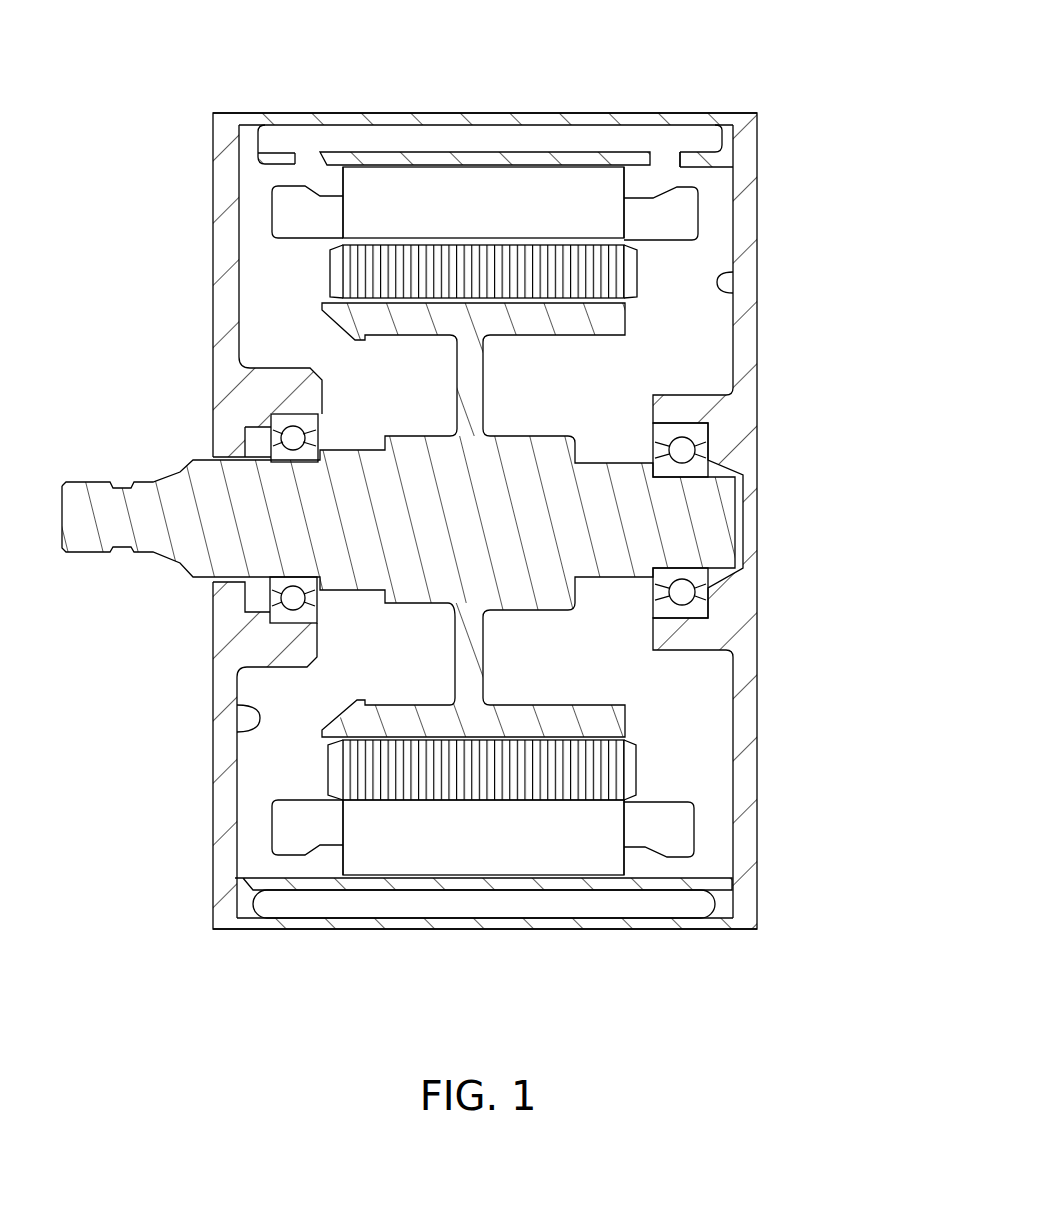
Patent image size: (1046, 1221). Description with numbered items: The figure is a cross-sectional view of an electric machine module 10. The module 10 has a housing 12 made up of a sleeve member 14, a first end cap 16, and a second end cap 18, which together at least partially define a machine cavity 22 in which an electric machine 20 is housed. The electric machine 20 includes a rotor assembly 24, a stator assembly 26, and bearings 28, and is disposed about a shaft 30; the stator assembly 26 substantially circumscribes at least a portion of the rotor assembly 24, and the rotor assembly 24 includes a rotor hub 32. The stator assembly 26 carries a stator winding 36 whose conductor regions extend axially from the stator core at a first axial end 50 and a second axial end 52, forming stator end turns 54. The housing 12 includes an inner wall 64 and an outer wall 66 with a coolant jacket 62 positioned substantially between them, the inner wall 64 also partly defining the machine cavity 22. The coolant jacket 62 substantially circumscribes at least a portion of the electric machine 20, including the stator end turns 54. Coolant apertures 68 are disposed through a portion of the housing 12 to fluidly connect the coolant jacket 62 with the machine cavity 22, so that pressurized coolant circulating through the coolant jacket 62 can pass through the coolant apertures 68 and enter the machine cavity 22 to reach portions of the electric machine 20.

The electric machine module 10 is at (735, 44).
The housing 12 is at (752, 113).
The sleeve member 14 is at (343, 112).
The first end cap 16 is at (765, 167).
The second end cap 18 is at (213, 160).
The electric machine 20 is at (310, 783).
The machine cavity 22 is at (656, 308).
The rotor assembly 24 is at (610, 270).
The stator assembly 26 is at (410, 185).
The bearings 28 is at (290, 436).
The shaft 30 is at (78, 487).
The rotor hub 32 is at (485, 363).
The stator winding 36 is at (498, 125).
The first axial end 50 is at (343, 187).
The second axial end 52 is at (628, 178).
The stator end turns 54 is at (273, 222).
The coolant jacket 62 is at (450, 138).
The inner wall 64 is at (268, 162).
The outer wall 66 is at (593, 108).
The coolant aperture 68 is at (305, 155).